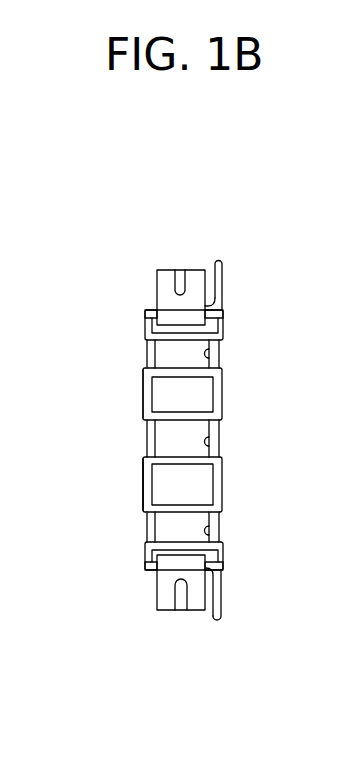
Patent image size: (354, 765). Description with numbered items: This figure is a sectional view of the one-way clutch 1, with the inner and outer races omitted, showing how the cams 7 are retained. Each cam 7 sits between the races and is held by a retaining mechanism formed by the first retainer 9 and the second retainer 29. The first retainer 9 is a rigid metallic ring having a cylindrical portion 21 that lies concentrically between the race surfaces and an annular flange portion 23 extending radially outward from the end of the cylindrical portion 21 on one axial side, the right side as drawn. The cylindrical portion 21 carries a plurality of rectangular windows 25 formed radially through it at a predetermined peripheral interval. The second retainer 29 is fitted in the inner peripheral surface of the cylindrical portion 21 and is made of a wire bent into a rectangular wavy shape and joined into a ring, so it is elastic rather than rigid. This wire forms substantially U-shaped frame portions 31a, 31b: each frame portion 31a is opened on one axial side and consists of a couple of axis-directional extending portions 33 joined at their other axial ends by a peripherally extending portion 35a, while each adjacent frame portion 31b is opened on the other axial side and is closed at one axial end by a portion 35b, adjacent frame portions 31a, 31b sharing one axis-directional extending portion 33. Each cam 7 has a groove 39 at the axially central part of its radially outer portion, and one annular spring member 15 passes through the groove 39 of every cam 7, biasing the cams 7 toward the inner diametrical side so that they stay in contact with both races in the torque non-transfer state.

The one-way clutch 1 is at (262, 204).
The cam 7 is at (197, 285).
The first retainer 9 is at (225, 263).
The spring member 15 is at (157, 284).
The cylindrical portion 21 is at (148, 310).
The annular flange portion 23 is at (225, 289).
The rectangular window 25 is at (213, 353).
The second retainer 29 is at (142, 495).
The frame portion 31a is at (226, 391).
The frame portion 31b is at (146, 440).
The axis-directional extending portion 33 is at (163, 414).
The peripherally extending portion 35a is at (143, 400).
The peripherally extending portion 35b is at (220, 362).
The groove 39 is at (180, 290).